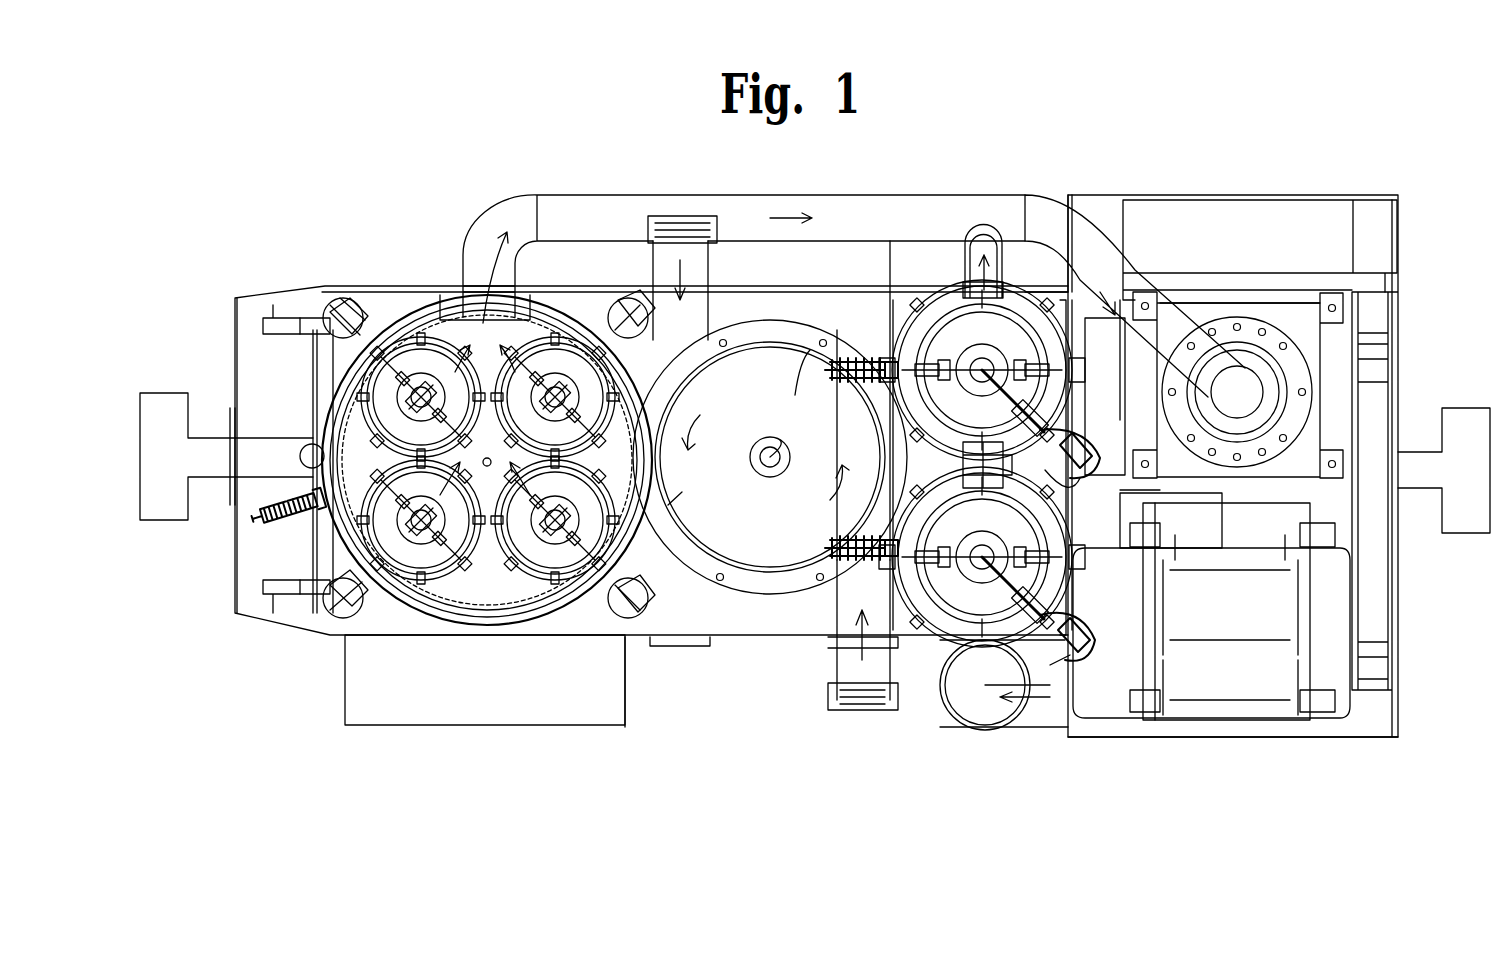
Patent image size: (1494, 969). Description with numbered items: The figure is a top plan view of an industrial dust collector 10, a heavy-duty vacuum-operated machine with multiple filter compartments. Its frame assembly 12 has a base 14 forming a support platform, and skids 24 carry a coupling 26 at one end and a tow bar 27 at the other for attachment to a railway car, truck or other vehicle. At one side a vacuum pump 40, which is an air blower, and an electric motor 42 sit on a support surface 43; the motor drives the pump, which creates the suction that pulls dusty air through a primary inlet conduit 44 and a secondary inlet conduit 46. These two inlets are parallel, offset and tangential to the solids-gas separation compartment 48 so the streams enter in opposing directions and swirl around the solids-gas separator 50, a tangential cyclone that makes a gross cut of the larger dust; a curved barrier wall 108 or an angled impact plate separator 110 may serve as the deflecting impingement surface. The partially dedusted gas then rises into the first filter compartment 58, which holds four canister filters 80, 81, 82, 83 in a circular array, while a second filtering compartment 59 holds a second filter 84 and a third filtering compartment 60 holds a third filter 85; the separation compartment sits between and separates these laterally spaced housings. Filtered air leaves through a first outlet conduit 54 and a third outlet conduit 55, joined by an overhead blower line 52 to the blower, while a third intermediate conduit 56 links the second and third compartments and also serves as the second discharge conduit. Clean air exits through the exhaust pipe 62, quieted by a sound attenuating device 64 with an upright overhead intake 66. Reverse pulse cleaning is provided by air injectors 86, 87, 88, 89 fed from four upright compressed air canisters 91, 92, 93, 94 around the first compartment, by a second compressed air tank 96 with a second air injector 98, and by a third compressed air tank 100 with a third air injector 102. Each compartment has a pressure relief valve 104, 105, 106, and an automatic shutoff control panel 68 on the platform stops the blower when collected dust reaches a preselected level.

The industrial dust collector 10 is at (765, 676).
The frame assembly 12 is at (642, 650).
The base 14 is at (815, 635).
The skids 24 is at (237, 346).
The coupling 26 is at (165, 520).
The tow bar 27 is at (1478, 533).
The vacuum pump 40 is at (1240, 392).
The electric motor 42 is at (1392, 700).
The support surface 43 is at (1115, 737).
The primary inlet conduit 44 is at (868, 712).
The secondary inlet conduit 46 is at (690, 215).
The solids-gas separation compartment 48 is at (770, 457).
The solids-gas separator 50 is at (868, 392).
The overhead blower line 52 is at (1140, 245).
The first discharge outlet conduit 54 is at (463, 268).
The third discharge outlet conduit 55 is at (962, 263).
The third intermediate conduit 56 is at (960, 467).
The first filter compartment 58 is at (476, 536).
The second filtering compartment 59 is at (1008, 475).
The third filtering compartment 60 is at (905, 322).
The exhaust pipe 62 is at (990, 728).
The sound attenuating device 64 is at (1300, 198).
The upright overhead intake 66 is at (1398, 300).
The automatic shutoff control panel 68 is at (410, 725).
The canister filter 80 is at (432, 540).
The canister filter 81 is at (565, 540).
The canister filter 82 is at (440, 422).
The canister filter 83 is at (568, 420).
The second filter 84 is at (1002, 522).
The third filter 85 is at (1002, 335).
The air injector 86 is at (370, 618).
The air injector 87 is at (605, 618).
The air injector 88 is at (375, 300).
The air injector 89 is at (612, 312).
The compressed air canister 91 is at (328, 562).
The compressed air canister 92 is at (660, 592).
The compressed air canister 93 is at (325, 320).
The compressed air canister 94 is at (620, 296).
The second compressed air tank 96 is at (1075, 632).
The second air injector 98 is at (1078, 648).
The third compressed air tank 100 is at (1082, 445).
The third air injector 102 is at (1081, 493).
The pressure relief valve 104 is at (262, 518).
The pressure relief valve 105 is at (825, 548).
The pressure relief valve 106 is at (832, 350).
The curved barrier wall 108 is at (700, 489).
The angled impact plate separator 110 is at (776, 377).